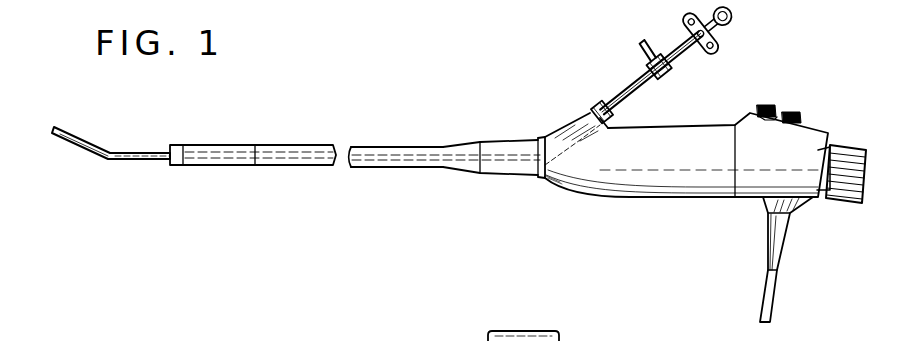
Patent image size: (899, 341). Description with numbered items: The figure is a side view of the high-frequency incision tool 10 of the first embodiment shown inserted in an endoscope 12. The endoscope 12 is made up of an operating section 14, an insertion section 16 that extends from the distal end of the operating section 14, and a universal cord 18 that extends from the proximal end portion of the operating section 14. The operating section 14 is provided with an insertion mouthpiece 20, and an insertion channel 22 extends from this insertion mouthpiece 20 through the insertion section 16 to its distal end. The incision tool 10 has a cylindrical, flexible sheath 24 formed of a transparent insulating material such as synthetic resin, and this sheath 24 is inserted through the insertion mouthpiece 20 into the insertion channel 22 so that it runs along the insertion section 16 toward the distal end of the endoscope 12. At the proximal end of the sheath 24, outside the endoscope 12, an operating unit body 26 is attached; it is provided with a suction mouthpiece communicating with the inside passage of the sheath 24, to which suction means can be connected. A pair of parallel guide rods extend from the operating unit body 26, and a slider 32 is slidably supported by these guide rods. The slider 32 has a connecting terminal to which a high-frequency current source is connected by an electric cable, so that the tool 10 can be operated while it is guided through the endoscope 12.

The high-frequency incision tool 10 is at (598, 76).
The endoscope 12 is at (460, 135).
The operating section 14 is at (625, 198).
The insertion section 16 is at (297, 145).
The universal cord 18 is at (788, 252).
The insertion mouthpiece 20 is at (595, 104).
The insertion channel 22 is at (400, 147).
The sheath 24 is at (150, 150).
The operating unit body 26 is at (676, 78).
The slider 32 is at (732, 40).